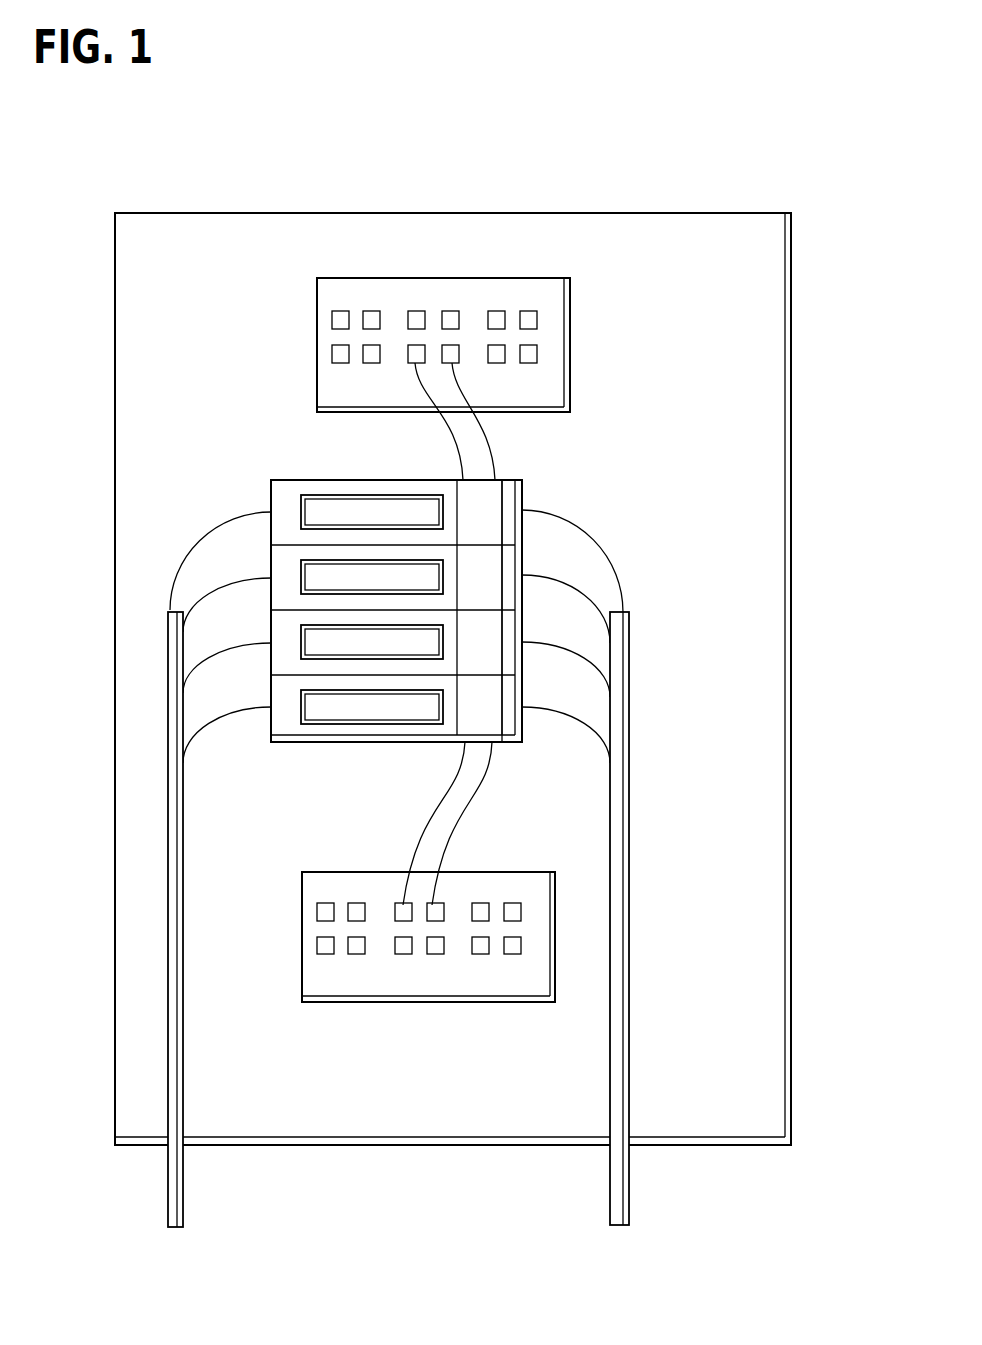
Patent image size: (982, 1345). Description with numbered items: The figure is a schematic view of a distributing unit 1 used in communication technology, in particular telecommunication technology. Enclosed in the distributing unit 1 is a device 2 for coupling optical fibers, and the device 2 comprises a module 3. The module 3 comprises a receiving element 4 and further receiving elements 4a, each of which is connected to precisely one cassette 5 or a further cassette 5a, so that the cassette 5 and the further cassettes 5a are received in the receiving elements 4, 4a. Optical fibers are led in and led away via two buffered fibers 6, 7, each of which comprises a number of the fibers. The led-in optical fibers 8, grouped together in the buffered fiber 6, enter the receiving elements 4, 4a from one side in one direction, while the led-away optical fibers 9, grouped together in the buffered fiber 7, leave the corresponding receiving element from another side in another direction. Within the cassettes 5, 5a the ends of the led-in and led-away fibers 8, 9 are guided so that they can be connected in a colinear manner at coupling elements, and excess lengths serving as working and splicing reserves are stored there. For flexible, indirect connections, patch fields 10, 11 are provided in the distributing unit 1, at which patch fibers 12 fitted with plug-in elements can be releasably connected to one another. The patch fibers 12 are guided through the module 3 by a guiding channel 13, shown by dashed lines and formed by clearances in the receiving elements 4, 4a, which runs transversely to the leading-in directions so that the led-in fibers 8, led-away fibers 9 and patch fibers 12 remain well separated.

The distributing unit 1 is at (775, 186).
The device for coupling optical fibers 2 is at (531, 471).
The module 3 is at (285, 492).
The receiving element 4 is at (523, 508).
The further receiving elements 4a is at (523, 568).
The cassette 5 is at (313, 510).
The further cassettes 5a is at (305, 577).
The buffered fiber 6 is at (175, 927).
The buffered fiber 7 is at (622, 935).
The led-in optical fibers 8 is at (207, 598).
The led-away optical fibers 9 is at (590, 602).
The patch field 10 is at (312, 977).
The patch field 11 is at (550, 373).
The patch fibers 12 is at (458, 448).
The guiding channel 13 is at (485, 717).